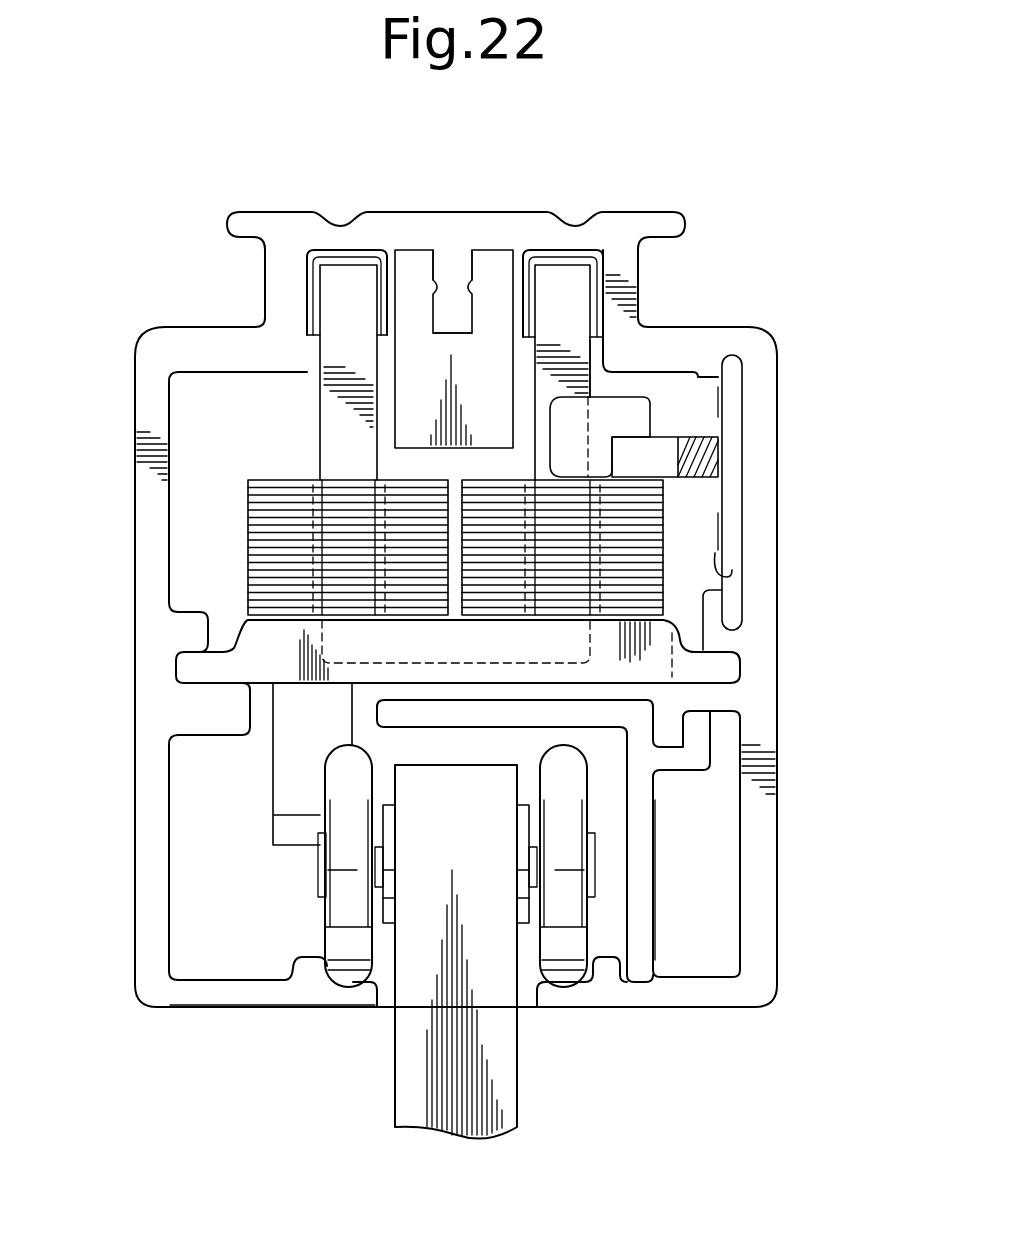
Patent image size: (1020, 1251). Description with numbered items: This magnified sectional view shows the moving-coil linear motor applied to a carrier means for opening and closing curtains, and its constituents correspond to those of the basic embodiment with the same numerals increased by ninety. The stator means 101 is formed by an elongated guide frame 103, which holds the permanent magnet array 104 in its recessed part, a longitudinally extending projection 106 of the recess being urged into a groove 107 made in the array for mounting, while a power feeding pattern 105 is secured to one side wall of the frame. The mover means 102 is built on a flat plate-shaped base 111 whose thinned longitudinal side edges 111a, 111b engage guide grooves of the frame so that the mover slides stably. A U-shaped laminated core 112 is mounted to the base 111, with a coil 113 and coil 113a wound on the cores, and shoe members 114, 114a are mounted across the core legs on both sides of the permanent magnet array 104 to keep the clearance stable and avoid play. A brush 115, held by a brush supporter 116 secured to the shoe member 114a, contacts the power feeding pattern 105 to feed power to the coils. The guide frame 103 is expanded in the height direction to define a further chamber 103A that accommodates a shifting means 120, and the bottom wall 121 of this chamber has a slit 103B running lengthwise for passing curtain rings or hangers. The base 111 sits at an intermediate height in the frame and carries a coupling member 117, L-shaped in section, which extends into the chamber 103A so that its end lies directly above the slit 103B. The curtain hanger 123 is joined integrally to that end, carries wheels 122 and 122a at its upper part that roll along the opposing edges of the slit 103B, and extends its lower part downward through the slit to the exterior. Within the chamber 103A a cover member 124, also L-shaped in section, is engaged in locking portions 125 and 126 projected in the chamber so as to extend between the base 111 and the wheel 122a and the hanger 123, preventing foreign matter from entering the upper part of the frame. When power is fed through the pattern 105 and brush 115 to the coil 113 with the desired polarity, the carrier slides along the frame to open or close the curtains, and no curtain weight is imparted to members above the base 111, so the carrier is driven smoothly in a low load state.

The stator means 101 is at (424, 212).
The mover means 102 is at (249, 543).
The guide frame 103 is at (765, 502).
The chamber 103A is at (727, 926).
The slit 103B is at (560, 953).
The permanent magnet array 104 is at (587, 373).
The power feeding pattern 105 is at (717, 573).
The projection 106 is at (453, 297).
The groove 107 is at (487, 380).
The base 111 is at (617, 660).
The side edge 111a is at (198, 670).
The side edge 111b is at (725, 663).
The core 112 is at (605, 362).
The coil 113 is at (650, 573).
The coil 113a is at (312, 342).
The shoe member 114 is at (312, 288).
The shoe member 114a is at (630, 318).
The brush 115 is at (707, 462).
The brush supporter 116 is at (660, 457).
The coupling member 117 is at (292, 763).
The shifting means 120 is at (302, 862).
The bottom wall 121 is at (238, 993).
The wheel 122 is at (350, 947).
The wheel 122a is at (548, 990).
The curtain hanger 123 is at (493, 1063).
The cover member 124 is at (645, 860).
The locking portion 125 is at (667, 953).
The locking portion 126 is at (700, 755).